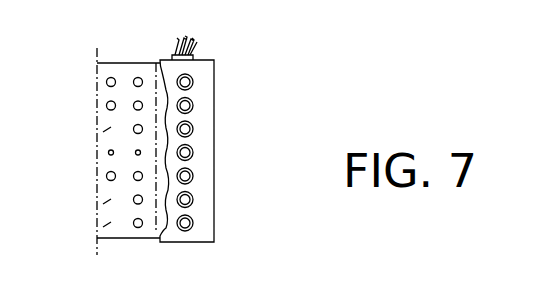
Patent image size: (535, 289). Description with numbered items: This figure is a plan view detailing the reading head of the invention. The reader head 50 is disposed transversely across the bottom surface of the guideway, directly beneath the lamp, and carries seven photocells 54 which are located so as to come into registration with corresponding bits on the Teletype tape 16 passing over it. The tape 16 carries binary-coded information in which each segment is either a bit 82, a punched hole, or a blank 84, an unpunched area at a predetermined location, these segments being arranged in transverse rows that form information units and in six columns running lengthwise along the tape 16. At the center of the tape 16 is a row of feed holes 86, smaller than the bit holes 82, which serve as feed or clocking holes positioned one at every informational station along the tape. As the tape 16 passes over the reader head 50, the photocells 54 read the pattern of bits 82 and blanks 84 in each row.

The tape 16 is at (123, 237).
The reader head 50 is at (206, 62).
The photocells 54 is at (193, 106).
The bit 82 is at (111, 77).
The blank 84 is at (103, 131).
The feed holes 86 is at (108, 153).